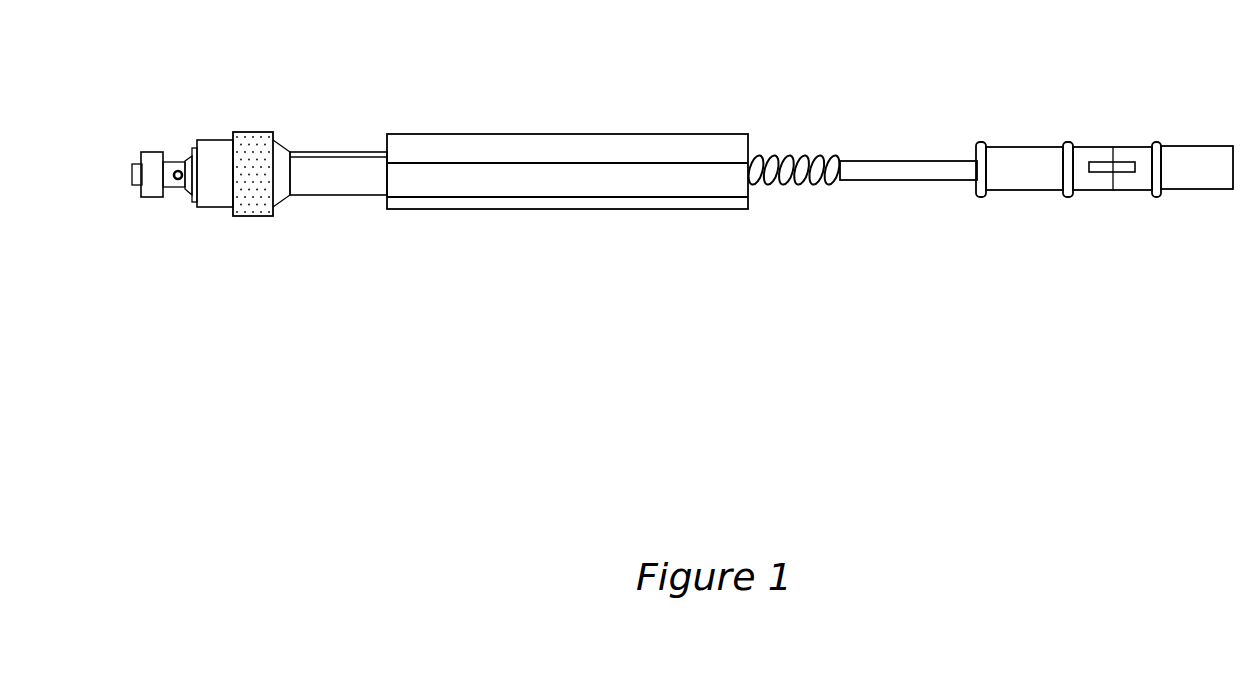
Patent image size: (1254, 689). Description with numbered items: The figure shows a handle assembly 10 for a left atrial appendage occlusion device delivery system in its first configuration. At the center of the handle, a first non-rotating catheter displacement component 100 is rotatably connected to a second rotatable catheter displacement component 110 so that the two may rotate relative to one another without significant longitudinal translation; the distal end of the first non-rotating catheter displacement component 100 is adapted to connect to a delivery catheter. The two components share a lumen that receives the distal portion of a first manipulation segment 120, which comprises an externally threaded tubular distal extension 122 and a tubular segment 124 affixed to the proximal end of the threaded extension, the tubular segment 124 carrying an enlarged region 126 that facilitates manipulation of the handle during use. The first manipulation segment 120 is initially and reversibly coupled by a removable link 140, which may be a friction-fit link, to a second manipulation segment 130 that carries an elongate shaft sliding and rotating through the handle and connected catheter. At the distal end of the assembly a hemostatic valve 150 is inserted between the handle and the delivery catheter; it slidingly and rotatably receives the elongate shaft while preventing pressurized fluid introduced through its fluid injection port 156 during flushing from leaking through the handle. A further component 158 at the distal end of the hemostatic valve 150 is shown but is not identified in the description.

The handle assembly 10 is at (391, 76).
The first non-rotating catheter displacement component 100 is at (340, 196).
The second rotatable catheter displacement component 110 is at (513, 133).
The first manipulation segment 120 is at (920, 215).
The externally threaded tubular distal extension 122 is at (800, 155).
The tubular segment 124 is at (905, 160).
The enlarged region 126 is at (1028, 146).
The second manipulation segment 130 is at (1188, 146).
The removable link 140 is at (1103, 164).
The hemostatic valve 150 is at (212, 139).
The fluid injection port 156 is at (178, 168).
The tip cap 158 is at (155, 199).